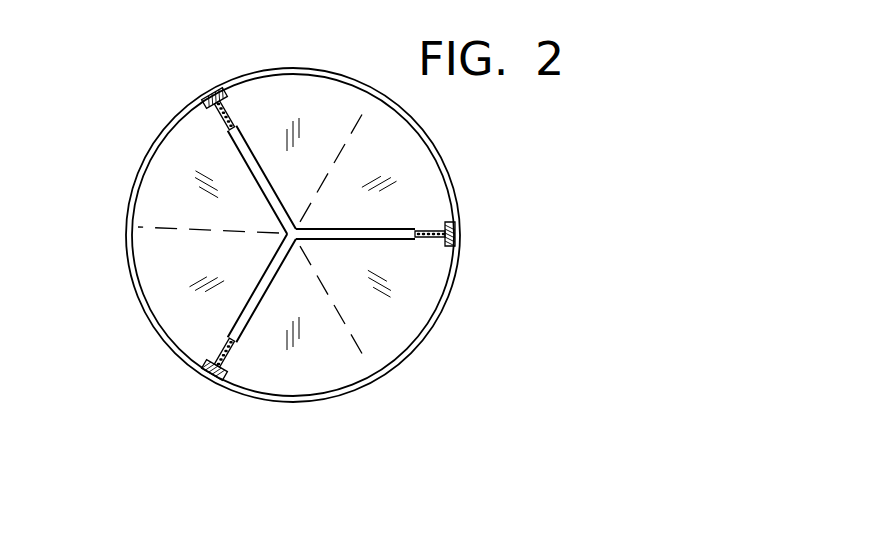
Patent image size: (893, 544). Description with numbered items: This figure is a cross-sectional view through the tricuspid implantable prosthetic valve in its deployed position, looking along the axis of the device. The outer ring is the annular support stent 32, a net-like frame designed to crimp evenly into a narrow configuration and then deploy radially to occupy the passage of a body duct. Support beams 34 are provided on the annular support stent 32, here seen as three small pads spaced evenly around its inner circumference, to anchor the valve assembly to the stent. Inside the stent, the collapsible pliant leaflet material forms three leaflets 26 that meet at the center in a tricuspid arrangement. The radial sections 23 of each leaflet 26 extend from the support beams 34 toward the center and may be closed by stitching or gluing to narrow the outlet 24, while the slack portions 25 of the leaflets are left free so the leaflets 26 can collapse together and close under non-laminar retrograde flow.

The radial section 23 is at (224, 116).
The outlet 24 is at (385, 230).
The slack portion 25 is at (257, 283).
The leaflet 26 is at (415, 344).
The annular support stent 32 is at (148, 290).
The support beam 34 is at (457, 228).